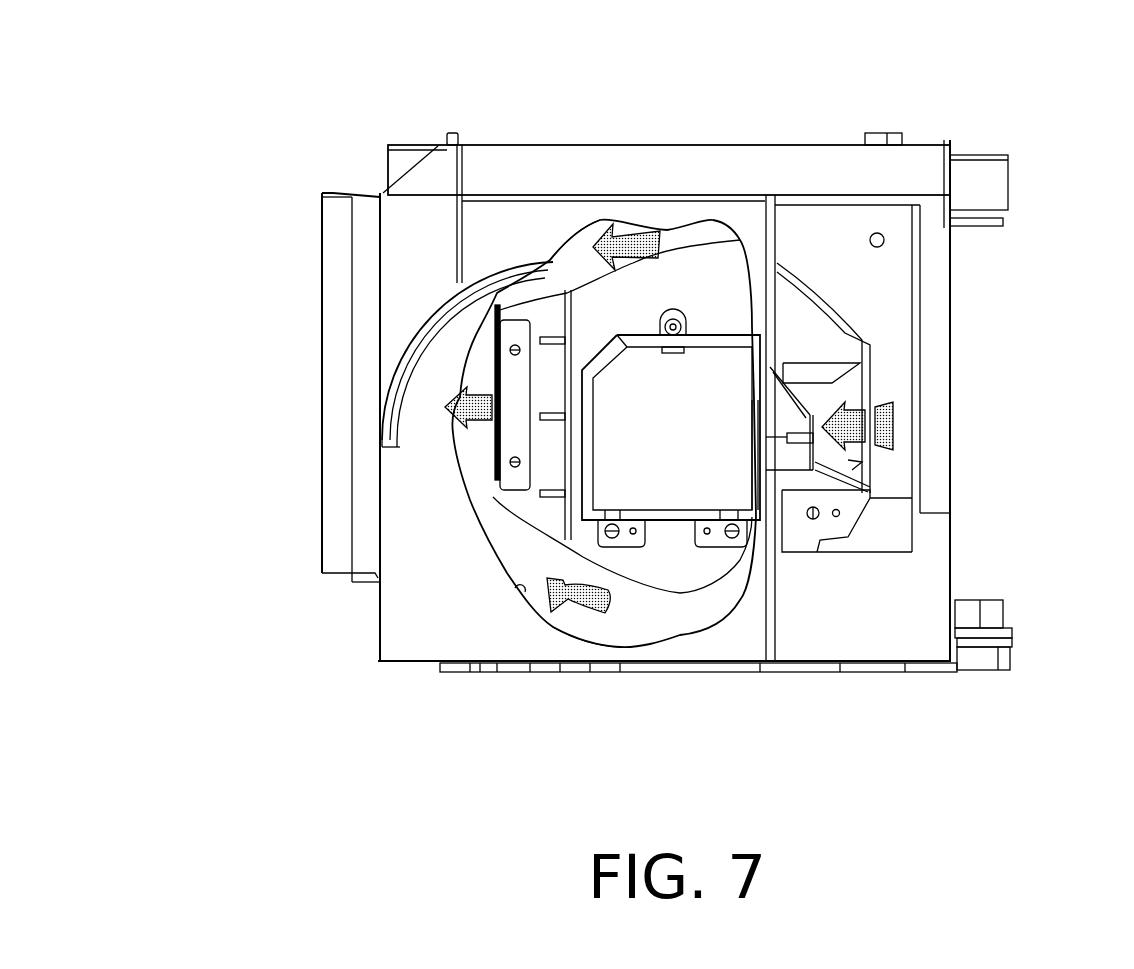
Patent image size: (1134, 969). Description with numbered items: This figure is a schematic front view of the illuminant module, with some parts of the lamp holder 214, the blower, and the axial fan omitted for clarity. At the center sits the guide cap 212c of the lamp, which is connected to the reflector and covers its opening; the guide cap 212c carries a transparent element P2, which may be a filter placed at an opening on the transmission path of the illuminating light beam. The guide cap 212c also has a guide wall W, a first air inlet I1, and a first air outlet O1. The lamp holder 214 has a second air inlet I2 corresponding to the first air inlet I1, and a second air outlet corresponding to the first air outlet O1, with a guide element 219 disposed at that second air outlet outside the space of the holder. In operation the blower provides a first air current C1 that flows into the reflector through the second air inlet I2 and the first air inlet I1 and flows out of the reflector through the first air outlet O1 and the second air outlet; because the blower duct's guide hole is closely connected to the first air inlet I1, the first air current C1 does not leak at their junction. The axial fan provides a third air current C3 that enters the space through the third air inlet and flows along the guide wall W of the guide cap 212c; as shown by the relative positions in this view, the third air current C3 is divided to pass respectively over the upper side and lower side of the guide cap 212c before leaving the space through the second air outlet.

The lamp holder 214 is at (718, 118).
The guide cap 212c is at (718, 281).
The guide element 219 is at (337, 378).
The transparent element P2 is at (683, 455).
The guide wall W is at (553, 280).
The third air current C3 is at (635, 252).
The first air current C1 is at (897, 425).
The first air inlet I1 is at (845, 472).
The second air inlet I2 is at (885, 312).
The first air outlet O1 is at (490, 440).